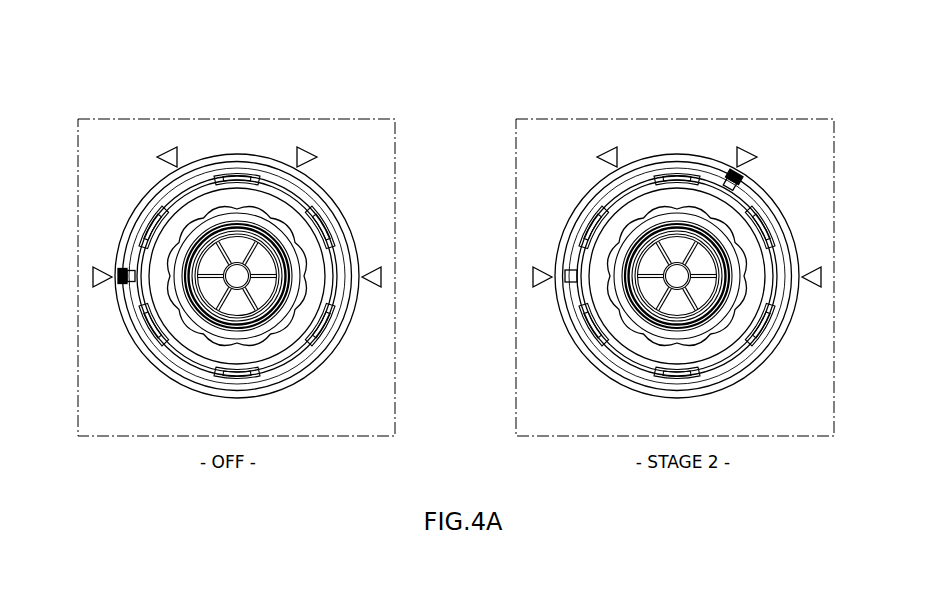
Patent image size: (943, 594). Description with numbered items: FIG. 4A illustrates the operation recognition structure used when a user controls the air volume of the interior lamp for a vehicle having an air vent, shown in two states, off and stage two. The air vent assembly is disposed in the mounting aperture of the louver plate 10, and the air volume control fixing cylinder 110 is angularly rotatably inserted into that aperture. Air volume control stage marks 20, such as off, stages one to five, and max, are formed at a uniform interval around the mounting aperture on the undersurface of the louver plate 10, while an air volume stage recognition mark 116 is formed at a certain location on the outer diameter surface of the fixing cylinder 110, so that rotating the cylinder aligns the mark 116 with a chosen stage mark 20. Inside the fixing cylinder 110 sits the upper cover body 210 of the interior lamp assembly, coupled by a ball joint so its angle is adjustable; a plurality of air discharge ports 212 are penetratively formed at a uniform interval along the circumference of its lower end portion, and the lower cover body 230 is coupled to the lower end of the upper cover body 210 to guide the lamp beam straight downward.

The louver plate 10 is at (91, 128).
The air volume control stage marks 20 is at (168, 149).
The air volume control fixing cylinder 110 is at (119, 250).
The air volume stage recognition mark 116 is at (119, 284).
The upper cover body 210 is at (204, 174).
The air discharge port 212 is at (248, 166).
The lower cover body 230 is at (316, 233).